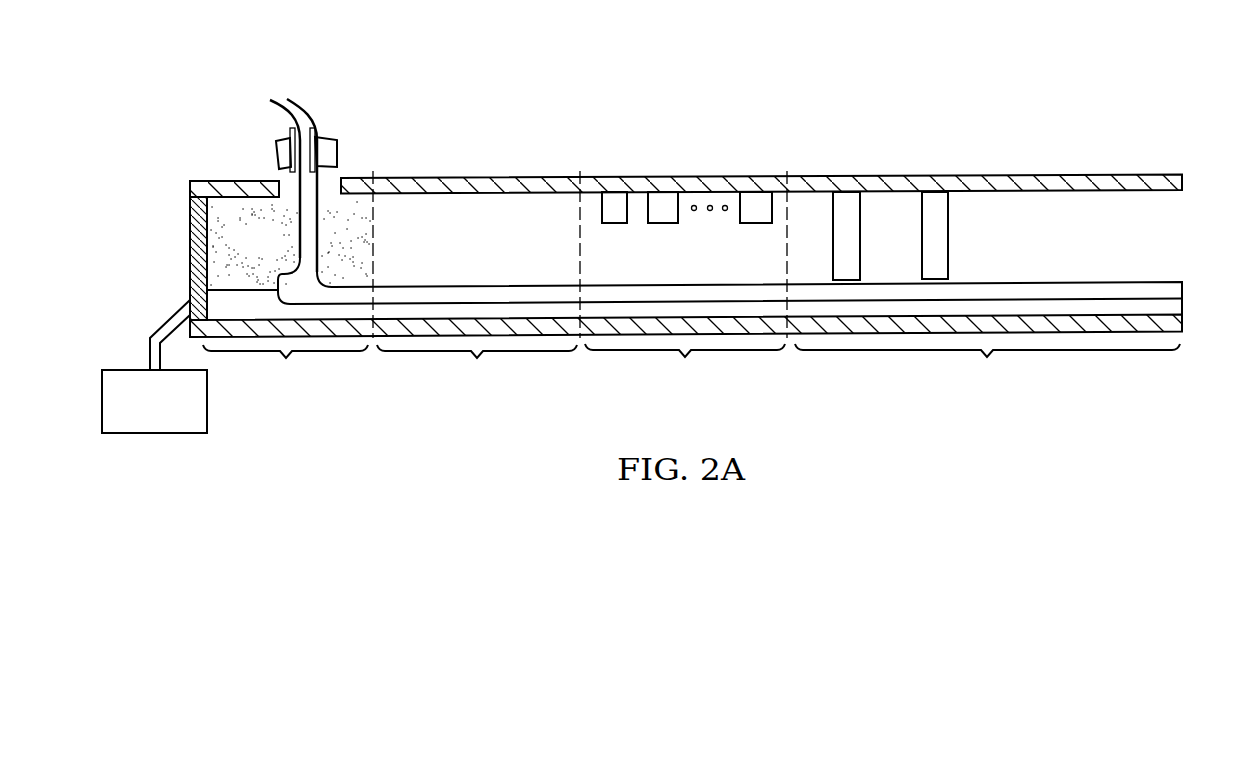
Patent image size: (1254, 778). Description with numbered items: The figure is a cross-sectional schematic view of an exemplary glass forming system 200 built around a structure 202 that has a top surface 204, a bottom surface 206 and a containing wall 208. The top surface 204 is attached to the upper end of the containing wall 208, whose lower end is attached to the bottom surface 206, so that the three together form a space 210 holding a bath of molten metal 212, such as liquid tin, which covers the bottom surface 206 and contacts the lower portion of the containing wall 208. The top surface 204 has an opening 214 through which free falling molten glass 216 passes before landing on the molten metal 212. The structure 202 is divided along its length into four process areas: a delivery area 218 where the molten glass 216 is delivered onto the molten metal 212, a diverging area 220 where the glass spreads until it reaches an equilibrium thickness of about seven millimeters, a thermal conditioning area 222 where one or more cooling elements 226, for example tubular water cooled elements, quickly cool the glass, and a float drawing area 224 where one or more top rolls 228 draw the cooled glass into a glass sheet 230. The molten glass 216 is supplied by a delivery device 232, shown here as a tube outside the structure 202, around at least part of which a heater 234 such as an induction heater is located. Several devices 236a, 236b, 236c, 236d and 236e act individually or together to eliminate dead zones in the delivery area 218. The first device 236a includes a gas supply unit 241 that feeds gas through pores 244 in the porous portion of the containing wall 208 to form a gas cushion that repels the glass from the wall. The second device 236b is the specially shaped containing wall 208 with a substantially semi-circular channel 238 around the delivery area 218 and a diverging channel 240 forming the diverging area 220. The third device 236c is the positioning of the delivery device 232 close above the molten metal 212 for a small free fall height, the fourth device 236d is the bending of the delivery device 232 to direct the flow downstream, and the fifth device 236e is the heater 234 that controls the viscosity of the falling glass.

The glass forming system 200 is at (1041, 67).
The structure 202 is at (1183, 181).
The top surface 204 is at (487, 178).
The bottom surface 206 is at (420, 338).
The containing wall 208 is at (192, 245).
The space 210 is at (495, 250).
The molten metal 212 is at (1182, 306).
The opening 214 is at (352, 187).
The molten glass 216 is at (314, 220).
The delivery area 218 is at (285, 368).
The diverging area 220 is at (477, 367).
The thermal conditioning area 222 is at (685, 366).
The float drawing area 224 is at (987, 366).
The cooling elements 226 is at (614, 226).
The top rolls 228 is at (862, 265).
The glass sheet 230 is at (1138, 283).
The delivery device 232 is at (285, 173).
The heater 234 is at (277, 142).
The first device 236a is at (176, 291).
The second device 236b is at (186, 194).
The third device 236c is at (280, 173).
The fourth device 236d is at (259, 114).
The fifth device 236e is at (326, 112).
The semi-circular channel 238 is at (277, 252).
The diverging channel 240 is at (558, 192).
The gas supply unit 241 is at (173, 413).
The pores 244 is at (318, 291).